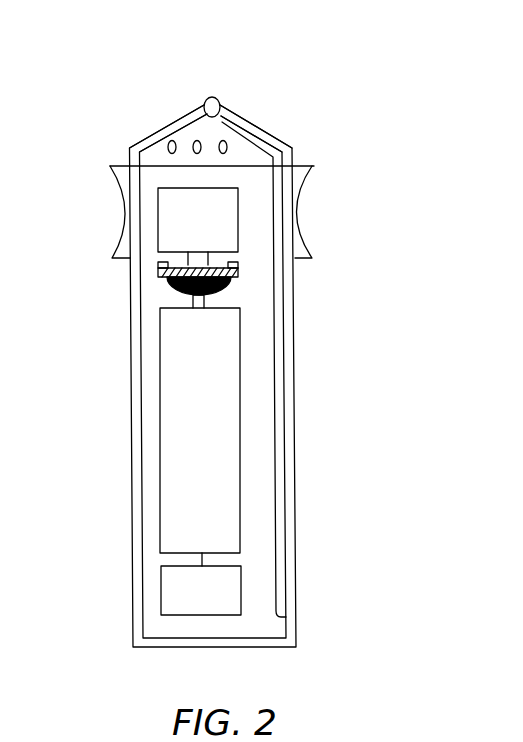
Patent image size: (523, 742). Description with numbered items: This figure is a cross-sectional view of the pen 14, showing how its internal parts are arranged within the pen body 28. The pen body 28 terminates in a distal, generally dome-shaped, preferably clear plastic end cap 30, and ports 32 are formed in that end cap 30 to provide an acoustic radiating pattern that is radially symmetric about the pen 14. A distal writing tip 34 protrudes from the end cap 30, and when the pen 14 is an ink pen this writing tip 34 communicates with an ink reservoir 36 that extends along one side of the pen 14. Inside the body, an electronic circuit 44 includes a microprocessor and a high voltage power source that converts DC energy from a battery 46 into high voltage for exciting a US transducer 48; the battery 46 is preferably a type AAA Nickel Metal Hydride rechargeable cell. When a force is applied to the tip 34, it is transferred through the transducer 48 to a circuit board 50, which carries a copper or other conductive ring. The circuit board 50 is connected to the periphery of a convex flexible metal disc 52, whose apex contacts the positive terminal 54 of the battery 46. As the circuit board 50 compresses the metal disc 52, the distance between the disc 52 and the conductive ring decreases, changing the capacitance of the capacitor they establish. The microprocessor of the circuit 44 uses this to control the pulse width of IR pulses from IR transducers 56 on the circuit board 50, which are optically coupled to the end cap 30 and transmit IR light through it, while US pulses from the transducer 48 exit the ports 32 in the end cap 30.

The pen 14 is at (381, 362).
The pen body 28 is at (132, 372).
The end cap 30 is at (167, 115).
The ports 32 is at (197, 140).
The writing tip 34 is at (213, 97).
The ink reservoir 36 is at (274, 485).
The electronic circuit 44 is at (183, 582).
The battery 46 is at (228, 350).
The US transducer 48 is at (238, 212).
The circuit board 50 is at (238, 270).
The flexible metal disc 52 is at (178, 291).
The positive terminal 54 is at (210, 303).
The IR transducers 56 is at (160, 268).